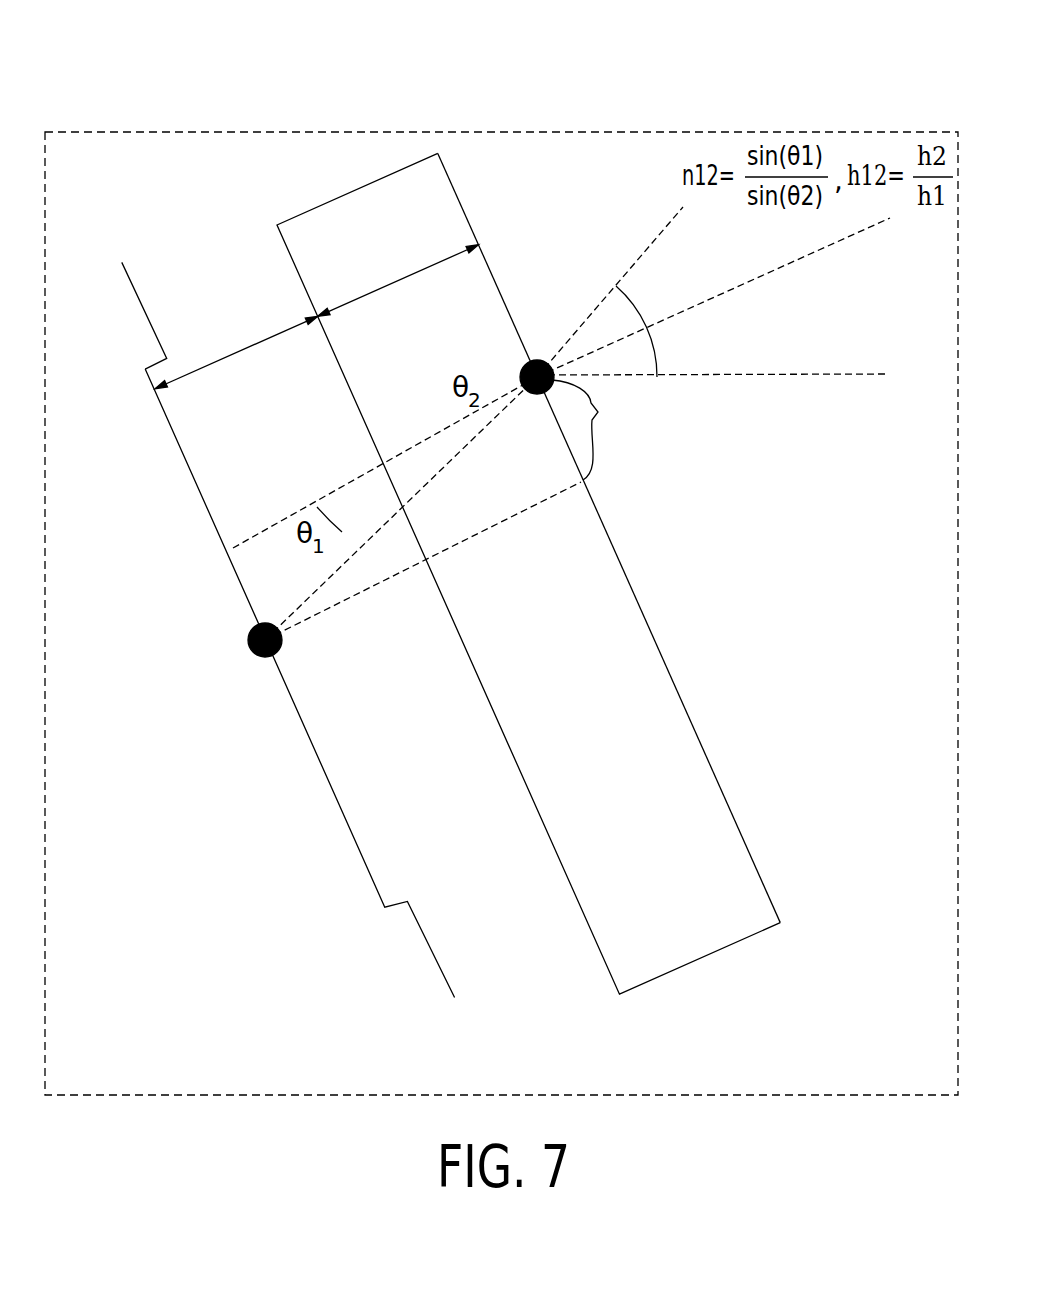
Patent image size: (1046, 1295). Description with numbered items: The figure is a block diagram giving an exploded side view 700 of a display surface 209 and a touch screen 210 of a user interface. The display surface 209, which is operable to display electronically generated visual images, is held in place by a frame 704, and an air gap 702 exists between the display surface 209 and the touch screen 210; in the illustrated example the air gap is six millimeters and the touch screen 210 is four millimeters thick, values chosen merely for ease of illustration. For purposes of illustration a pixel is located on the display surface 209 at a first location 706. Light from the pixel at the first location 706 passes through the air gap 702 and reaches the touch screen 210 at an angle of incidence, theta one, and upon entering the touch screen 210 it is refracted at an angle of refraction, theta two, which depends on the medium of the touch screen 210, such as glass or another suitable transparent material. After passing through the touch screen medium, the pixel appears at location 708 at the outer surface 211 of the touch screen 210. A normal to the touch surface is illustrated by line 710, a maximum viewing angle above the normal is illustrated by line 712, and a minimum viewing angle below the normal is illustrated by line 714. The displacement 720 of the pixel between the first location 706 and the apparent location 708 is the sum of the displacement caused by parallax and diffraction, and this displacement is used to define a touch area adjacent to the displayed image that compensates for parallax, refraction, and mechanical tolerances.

The exploded side view 700 is at (270, 70).
The frame 704 is at (137, 292).
The display surface 209 is at (337, 798).
The touch screen 210 is at (752, 852).
The surface of the touch screen 211 is at (612, 547).
The air gap 702 is at (460, 815).
The first location 706 is at (253, 625).
The location 708 is at (537, 360).
The line 710 is at (748, 283).
The line 712 is at (633, 267).
The line 714 is at (828, 370).
The displacement 720 is at (798, 483).